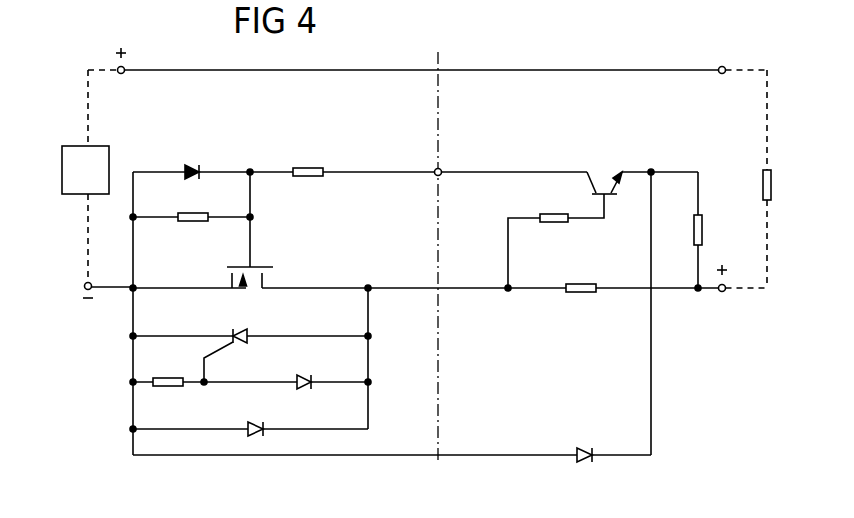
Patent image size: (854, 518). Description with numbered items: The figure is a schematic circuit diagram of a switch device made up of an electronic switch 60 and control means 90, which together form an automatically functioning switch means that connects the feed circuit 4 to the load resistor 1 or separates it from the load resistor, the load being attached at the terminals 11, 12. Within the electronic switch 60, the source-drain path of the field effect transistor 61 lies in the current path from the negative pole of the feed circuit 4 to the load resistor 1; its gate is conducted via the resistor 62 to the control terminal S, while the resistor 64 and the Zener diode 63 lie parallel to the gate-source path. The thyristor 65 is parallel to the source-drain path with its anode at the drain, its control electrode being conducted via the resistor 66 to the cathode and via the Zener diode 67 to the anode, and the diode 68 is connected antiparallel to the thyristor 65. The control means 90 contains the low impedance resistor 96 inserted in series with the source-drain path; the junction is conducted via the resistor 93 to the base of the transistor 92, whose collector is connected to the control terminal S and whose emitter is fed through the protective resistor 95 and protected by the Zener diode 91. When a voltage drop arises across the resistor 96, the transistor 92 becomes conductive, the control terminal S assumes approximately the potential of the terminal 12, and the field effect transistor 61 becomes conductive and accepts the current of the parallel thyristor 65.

The load resistor 1 is at (772, 179).
The feed circuit 4 is at (97, 222).
The output terminal (positive) 11 is at (740, 53).
The terminal 12 is at (741, 299).
The electronic switch 60 is at (263, 123).
The field effect transistor 61 is at (253, 230).
The resistor 62 is at (308, 152).
The Zener diode 63 is at (193, 153).
The resistor 64 is at (191, 233).
The thyristor 65 is at (250, 343).
The resistor 66 is at (170, 364).
The Zener diode 67 is at (286, 366).
The diode 68 is at (250, 417).
The control means 90 is at (667, 125).
The Zener diode 91 is at (584, 439).
The transistor 92 is at (604, 168).
The resistor 93 is at (556, 235).
The protective resistor 95 is at (713, 231).
The low impedance resistor 96 is at (581, 272).
The control terminal S is at (432, 158).